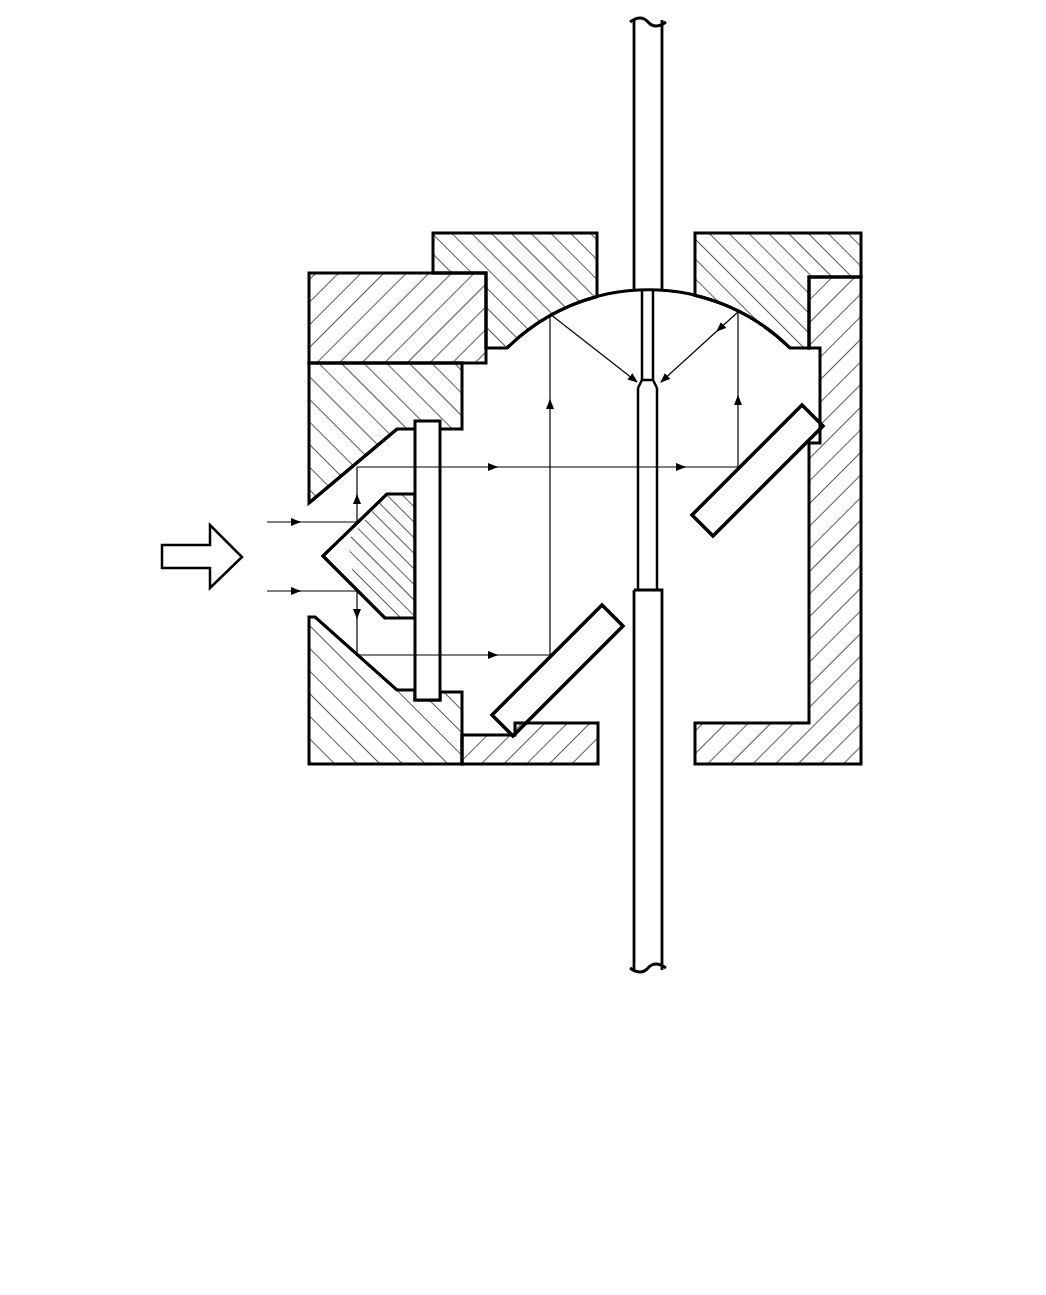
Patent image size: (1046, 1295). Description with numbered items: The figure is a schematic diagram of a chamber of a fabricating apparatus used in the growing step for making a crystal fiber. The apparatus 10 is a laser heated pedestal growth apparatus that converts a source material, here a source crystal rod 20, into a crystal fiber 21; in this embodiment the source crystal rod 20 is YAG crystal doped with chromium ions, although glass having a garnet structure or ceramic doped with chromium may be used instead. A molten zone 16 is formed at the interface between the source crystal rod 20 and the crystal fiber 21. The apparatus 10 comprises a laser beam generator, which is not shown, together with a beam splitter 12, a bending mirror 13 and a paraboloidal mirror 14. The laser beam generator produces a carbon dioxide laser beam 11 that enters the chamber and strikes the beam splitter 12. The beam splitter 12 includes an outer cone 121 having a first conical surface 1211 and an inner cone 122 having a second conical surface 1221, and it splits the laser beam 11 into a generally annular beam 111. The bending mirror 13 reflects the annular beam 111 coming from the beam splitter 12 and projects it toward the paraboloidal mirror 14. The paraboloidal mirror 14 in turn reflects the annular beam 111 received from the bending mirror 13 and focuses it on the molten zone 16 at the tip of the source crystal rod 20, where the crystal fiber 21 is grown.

The apparatus 10 is at (270, 184).
The laser beam 11 is at (187, 545).
The beam splitter 12 is at (264, 713).
The bending mirror 13 is at (765, 463).
The paraboloidal mirror 14 is at (505, 233).
The molten zone 16 is at (655, 388).
The source crystal rod 20 is at (645, 560).
The crystal fiber 21 is at (648, 343).
The annular beam 111 is at (482, 468).
The outer cone 121 is at (348, 556).
The inner cone 122 is at (340, 737).
The first conical surface 1211 is at (353, 588).
The second conical surface 1221 is at (357, 648).